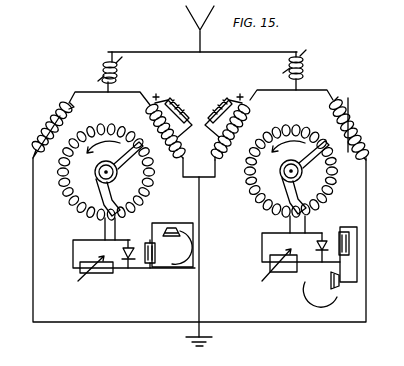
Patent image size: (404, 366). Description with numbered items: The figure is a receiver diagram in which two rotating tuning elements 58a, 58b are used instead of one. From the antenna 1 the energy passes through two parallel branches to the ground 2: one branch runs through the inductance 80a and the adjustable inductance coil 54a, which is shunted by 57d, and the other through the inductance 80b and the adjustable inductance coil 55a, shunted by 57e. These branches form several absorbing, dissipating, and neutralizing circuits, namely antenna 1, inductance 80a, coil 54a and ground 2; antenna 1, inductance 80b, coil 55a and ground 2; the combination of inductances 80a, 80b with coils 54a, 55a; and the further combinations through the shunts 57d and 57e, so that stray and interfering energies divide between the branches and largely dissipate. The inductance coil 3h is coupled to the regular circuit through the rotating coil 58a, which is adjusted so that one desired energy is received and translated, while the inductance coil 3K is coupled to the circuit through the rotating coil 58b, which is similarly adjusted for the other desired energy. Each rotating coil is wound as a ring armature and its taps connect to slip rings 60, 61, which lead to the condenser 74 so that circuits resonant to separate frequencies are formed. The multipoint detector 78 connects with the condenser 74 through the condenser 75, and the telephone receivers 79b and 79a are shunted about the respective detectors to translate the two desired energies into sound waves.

The antenna 1 is at (201, 29).
The ground 2 is at (203, 346).
The inductance coil 3h is at (48, 130).
The inductance coil 3K is at (352, 128).
The inductance 80a is at (123, 72).
The inductance 80b is at (310, 70).
The adjustable inductance coil 54a is at (154, 126).
The adjustable inductance coil 55a is at (243, 127).
The shunt 57d is at (186, 100).
The shunt 57e is at (223, 100).
The rotating tuning element 58a is at (106, 174).
The rotating tuning element 58b is at (291, 169).
The slip ring 60 is at (191, 162).
The slip ring 61 is at (308, 184).
The condenser 74 is at (187, 272).
The condenser 75 is at (251, 246).
The multipoint detector 78 is at (225, 259).
The telephone receiver 79a is at (323, 293).
The telephone receiver 79b is at (172, 237).